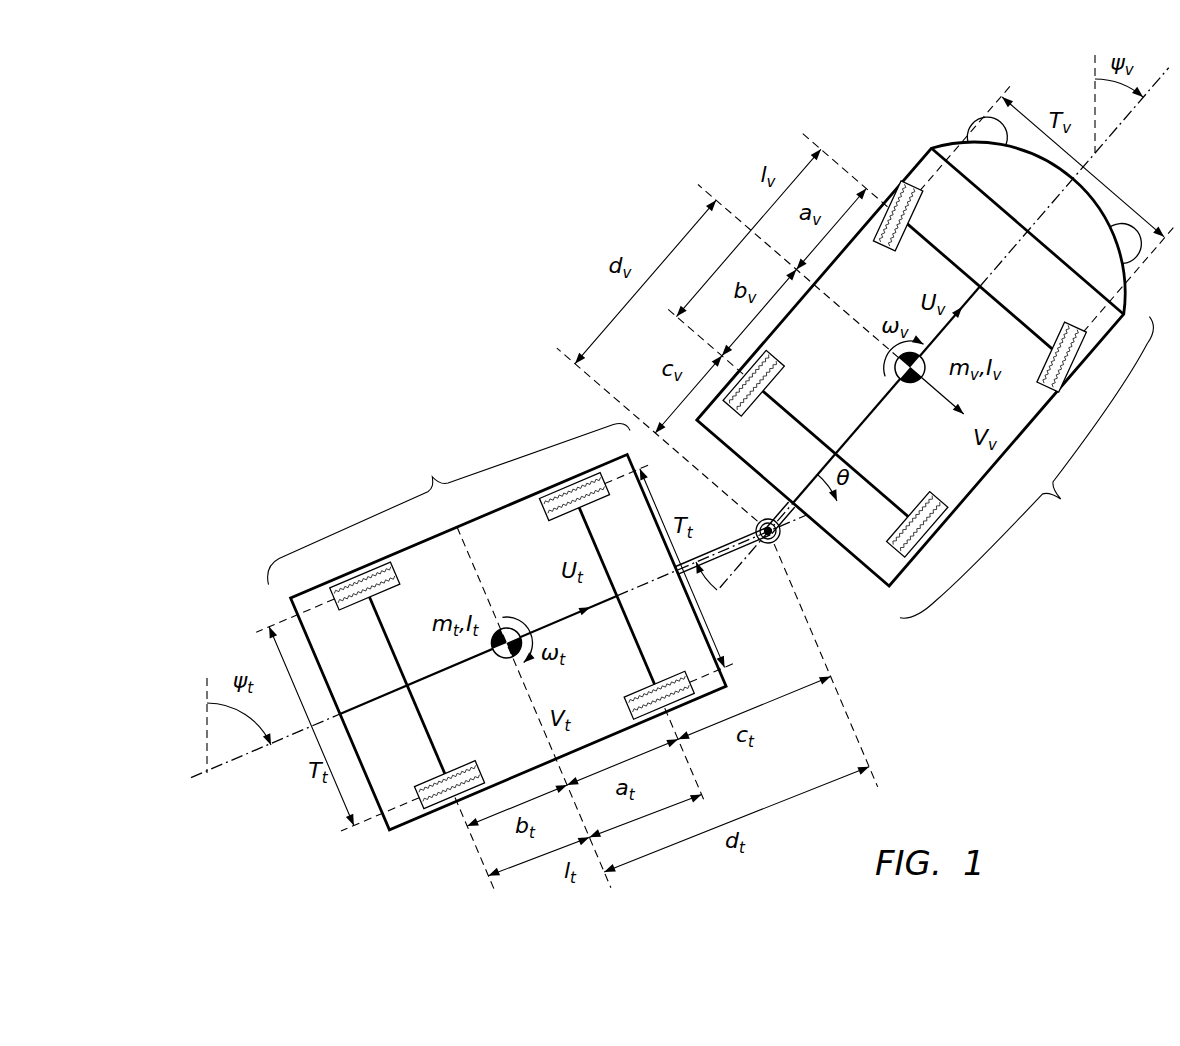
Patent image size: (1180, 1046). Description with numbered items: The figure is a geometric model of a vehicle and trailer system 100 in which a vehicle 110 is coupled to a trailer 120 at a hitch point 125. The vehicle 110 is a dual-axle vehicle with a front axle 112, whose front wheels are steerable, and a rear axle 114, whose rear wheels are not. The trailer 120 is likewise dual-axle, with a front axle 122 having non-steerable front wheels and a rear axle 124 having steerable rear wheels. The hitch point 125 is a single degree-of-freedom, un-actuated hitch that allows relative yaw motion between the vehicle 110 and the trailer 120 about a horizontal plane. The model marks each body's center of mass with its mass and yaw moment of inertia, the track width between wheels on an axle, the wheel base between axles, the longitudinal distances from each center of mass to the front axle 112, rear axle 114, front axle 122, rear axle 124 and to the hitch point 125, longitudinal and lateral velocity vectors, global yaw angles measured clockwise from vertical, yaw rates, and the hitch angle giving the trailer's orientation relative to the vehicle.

The vehicle and trailer system 100 is at (358, 229).
The vehicle 110 is at (844, 359).
The front axle 112 is at (958, 258).
The rear axle 114 is at (793, 407).
The trailer 120 is at (533, 683).
The front axle 122 is at (590, 557).
The rear axle 124 is at (420, 723).
The hitch point 125 is at (785, 543).